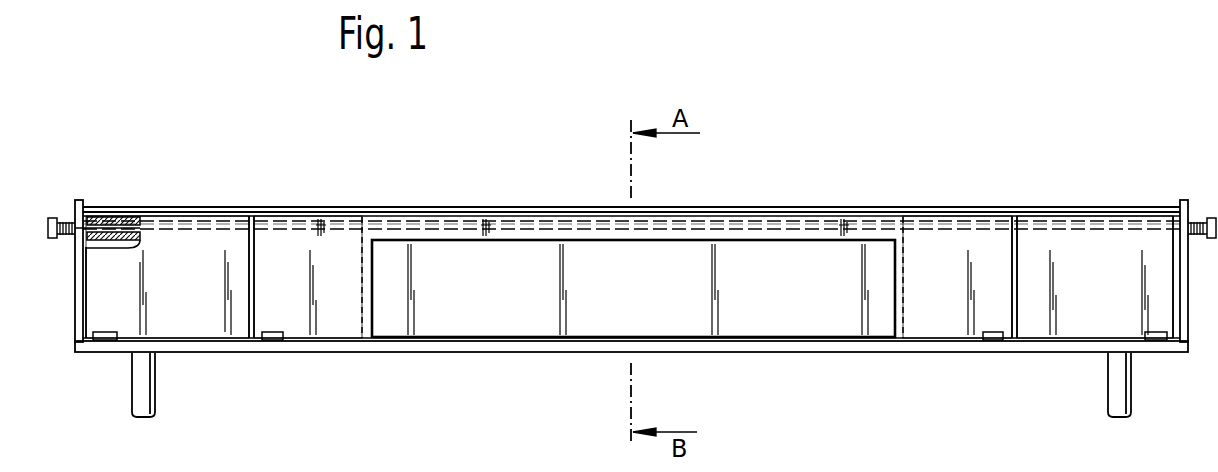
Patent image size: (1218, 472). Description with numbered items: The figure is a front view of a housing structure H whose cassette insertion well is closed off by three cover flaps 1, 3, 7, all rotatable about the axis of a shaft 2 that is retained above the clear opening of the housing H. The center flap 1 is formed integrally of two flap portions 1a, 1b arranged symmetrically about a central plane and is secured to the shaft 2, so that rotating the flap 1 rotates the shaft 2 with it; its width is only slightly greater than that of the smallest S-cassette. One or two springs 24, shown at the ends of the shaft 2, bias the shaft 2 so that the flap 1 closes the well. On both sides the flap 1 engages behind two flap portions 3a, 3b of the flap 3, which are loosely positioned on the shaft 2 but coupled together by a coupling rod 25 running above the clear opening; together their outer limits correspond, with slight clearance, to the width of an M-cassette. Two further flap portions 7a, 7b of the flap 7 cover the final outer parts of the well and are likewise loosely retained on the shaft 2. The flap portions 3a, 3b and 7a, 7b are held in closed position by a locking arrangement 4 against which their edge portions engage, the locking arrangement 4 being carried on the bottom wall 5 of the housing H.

The center flap 1 is at (487, 306).
The flap portion 1a is at (528, 307).
The flap portion 1b is at (773, 307).
The shaft 2 is at (118, 228).
The flap 3 is at (337, 312).
The flap portion 3a is at (293, 302).
The flap portion 3b is at (948, 305).
The locking arrangement 4 is at (107, 340).
The bottom wall 5 is at (803, 348).
The cover flap 7 is at (189, 257).
The flap portion 7a is at (181, 302).
The flap portion 7b is at (1094, 305).
The spring 24 is at (62, 213).
The coupling rod 25 is at (585, 233).
The housing structure H is at (454, 205).